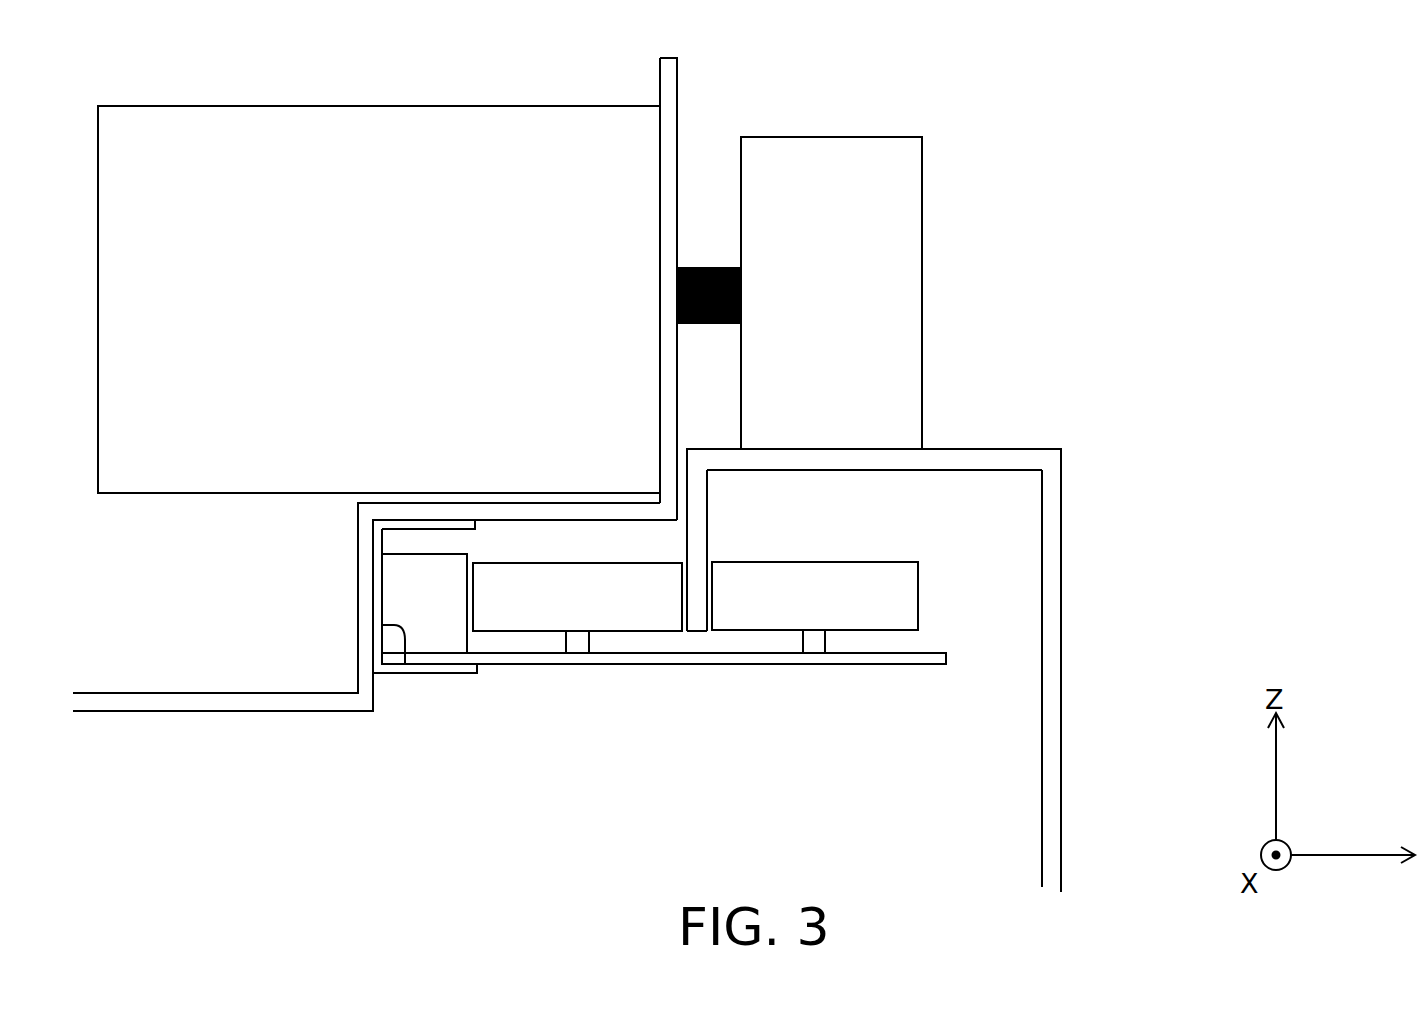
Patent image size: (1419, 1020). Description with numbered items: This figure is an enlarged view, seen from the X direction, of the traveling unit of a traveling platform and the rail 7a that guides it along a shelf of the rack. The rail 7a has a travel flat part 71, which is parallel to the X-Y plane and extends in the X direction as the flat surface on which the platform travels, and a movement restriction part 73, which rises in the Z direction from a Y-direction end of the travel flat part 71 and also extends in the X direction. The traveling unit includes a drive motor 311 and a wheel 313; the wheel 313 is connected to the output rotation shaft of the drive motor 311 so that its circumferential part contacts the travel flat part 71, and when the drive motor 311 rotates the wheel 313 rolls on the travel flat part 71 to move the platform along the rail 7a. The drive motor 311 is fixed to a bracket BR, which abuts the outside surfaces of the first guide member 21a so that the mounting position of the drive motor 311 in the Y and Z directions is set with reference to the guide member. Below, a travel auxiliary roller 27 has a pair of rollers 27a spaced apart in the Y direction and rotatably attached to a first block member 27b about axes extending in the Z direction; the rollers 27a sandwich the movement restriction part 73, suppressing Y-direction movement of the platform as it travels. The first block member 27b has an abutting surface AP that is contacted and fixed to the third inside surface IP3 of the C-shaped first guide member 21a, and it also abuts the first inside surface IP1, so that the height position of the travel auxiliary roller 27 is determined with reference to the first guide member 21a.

The drive motor 311 is at (385, 106).
The wheel 313 is at (838, 137).
The travel flat part 71 is at (987, 449).
The movement restriction part 73 is at (710, 505).
The rail 7a is at (1080, 658).
The travel auxiliary roller 27 is at (553, 752).
The rollers 27a is at (625, 613).
The first block member 27b is at (395, 572).
The first guide member 21a is at (460, 673).
The bracket BR is at (357, 525).
The first inside surface IP1 is at (422, 664).
The third inside surface IP3 is at (378, 604).
The abutting surface AP is at (405, 663).